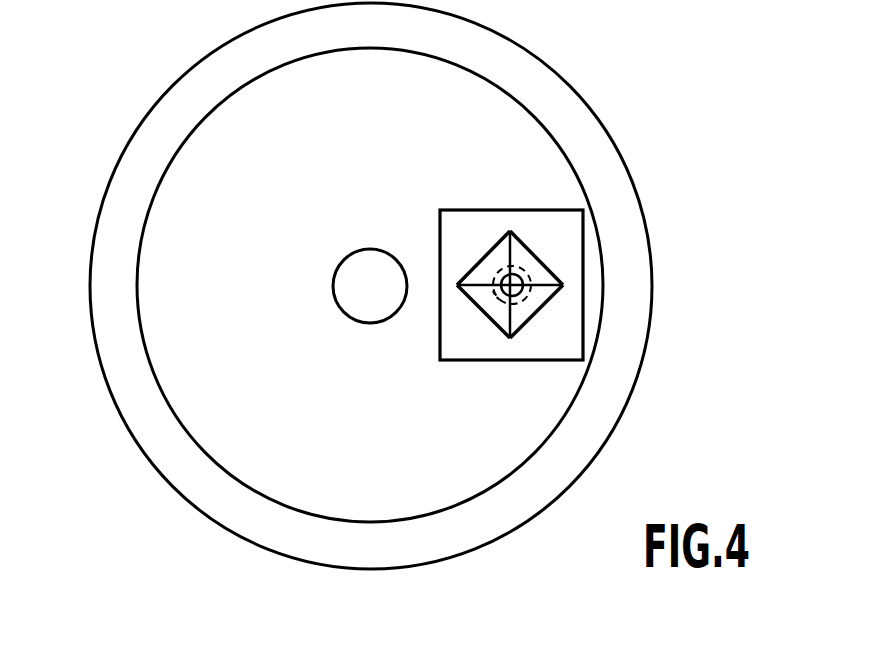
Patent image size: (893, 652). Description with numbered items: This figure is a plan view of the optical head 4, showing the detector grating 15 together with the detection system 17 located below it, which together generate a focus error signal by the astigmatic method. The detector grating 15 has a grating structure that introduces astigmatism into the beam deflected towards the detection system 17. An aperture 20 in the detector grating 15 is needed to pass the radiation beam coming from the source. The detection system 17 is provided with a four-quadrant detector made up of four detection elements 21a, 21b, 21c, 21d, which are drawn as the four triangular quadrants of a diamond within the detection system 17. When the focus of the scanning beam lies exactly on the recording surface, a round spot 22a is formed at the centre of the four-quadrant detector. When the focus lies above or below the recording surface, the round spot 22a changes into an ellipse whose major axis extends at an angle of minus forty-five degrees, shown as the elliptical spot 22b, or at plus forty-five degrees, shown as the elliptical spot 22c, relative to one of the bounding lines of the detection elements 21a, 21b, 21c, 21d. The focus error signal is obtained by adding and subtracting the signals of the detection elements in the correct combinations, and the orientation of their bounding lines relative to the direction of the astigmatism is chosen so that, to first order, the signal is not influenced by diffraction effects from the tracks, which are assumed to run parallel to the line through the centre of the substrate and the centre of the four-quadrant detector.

The housing ring 4 is at (617, 146).
The detector grating 15 is at (147, 215).
The detection system 17 is at (442, 338).
The aperture 20 is at (350, 320).
The detection element 21a is at (488, 252).
The detection element 21b is at (520, 265).
The detection element 21c is at (523, 322).
The detection element 21d is at (495, 318).
The round spot 22a is at (524, 297).
The elliptical spot 22b is at (529, 299).
The centre ring 22c is at (526, 269).